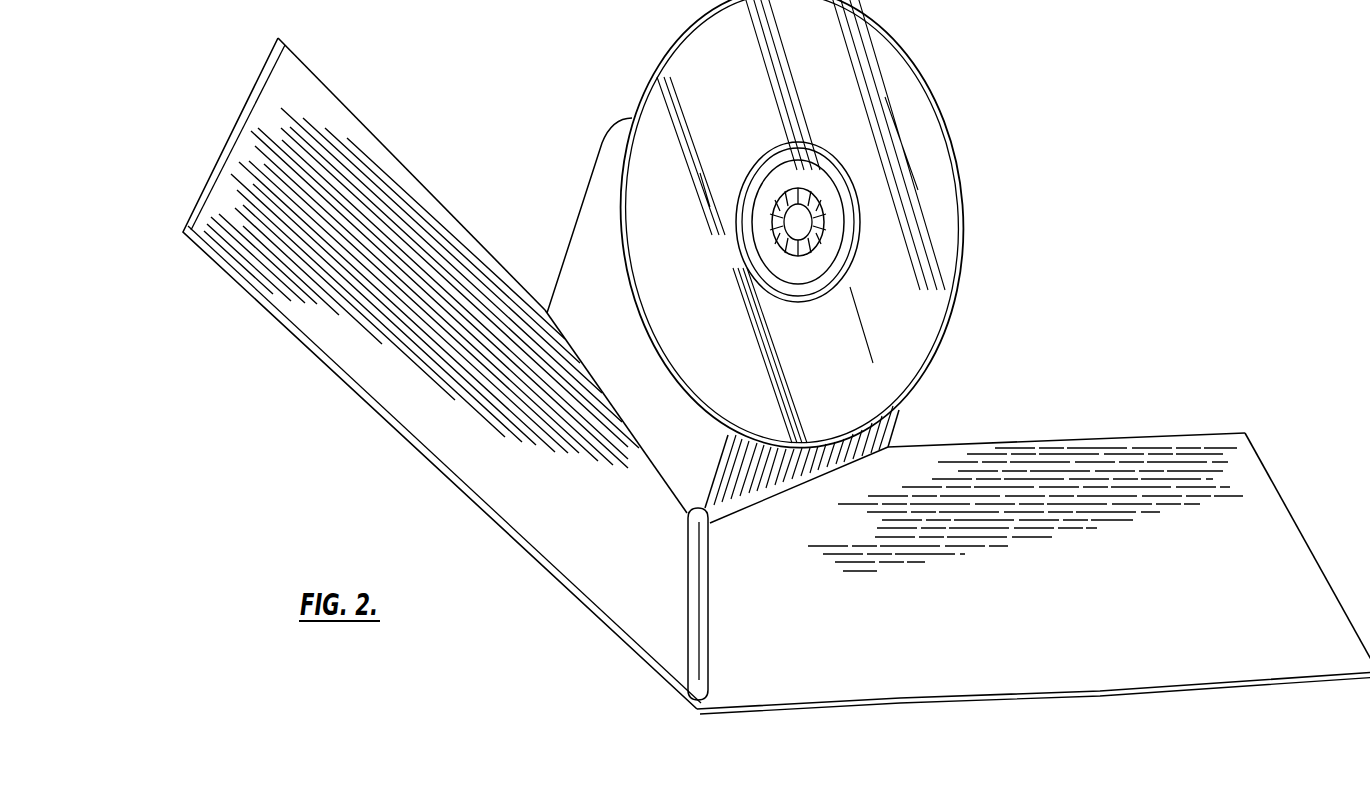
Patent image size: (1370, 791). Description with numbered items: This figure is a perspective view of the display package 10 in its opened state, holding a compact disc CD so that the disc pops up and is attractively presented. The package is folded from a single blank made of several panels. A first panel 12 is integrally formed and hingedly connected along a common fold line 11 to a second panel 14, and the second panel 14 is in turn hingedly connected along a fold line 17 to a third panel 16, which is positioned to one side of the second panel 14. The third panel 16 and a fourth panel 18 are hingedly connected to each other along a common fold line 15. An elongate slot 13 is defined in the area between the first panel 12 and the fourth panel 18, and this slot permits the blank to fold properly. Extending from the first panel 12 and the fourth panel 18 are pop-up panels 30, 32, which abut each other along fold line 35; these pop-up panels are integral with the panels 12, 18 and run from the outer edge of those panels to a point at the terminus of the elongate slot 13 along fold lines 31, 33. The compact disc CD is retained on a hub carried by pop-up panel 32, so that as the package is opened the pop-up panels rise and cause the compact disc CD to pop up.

The display package 10 is at (1073, 418).
The common fold line 11 is at (985, 695).
The first panel 12 is at (1184, 628).
The elongate slot 13 is at (710, 575).
The second panel 14 is at (1147, 690).
The common fold line 15 is at (546, 570).
The third panel 16 is at (372, 410).
The fold line 17 is at (697, 612).
The fourth panel 18 is at (607, 573).
The pop-up panel 30 is at (887, 443).
The fold line 31 is at (800, 492).
The pop-up panel 32 is at (606, 176).
The fold line 33 is at (666, 497).
The fold line 35 is at (717, 462).
The compact disc CD is at (915, 107).